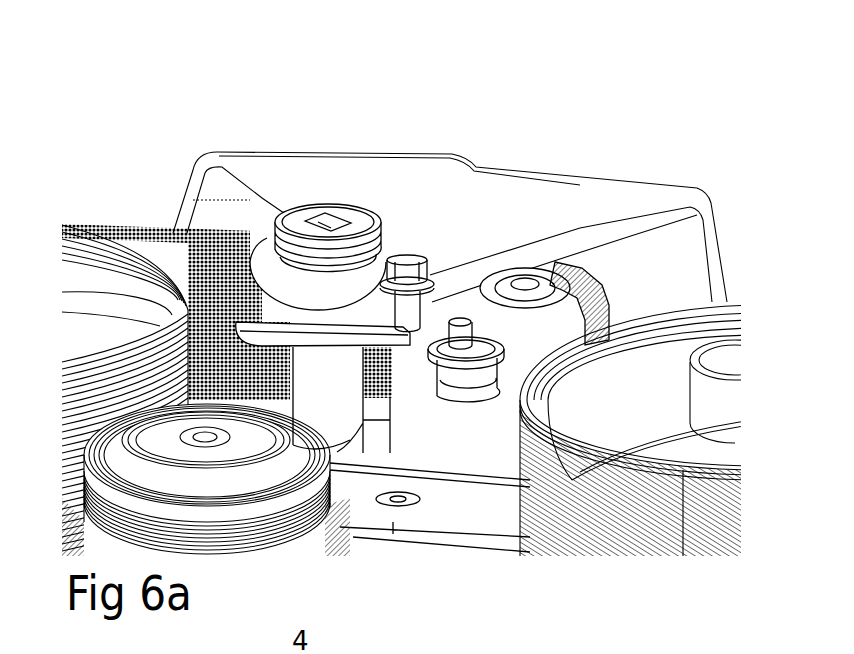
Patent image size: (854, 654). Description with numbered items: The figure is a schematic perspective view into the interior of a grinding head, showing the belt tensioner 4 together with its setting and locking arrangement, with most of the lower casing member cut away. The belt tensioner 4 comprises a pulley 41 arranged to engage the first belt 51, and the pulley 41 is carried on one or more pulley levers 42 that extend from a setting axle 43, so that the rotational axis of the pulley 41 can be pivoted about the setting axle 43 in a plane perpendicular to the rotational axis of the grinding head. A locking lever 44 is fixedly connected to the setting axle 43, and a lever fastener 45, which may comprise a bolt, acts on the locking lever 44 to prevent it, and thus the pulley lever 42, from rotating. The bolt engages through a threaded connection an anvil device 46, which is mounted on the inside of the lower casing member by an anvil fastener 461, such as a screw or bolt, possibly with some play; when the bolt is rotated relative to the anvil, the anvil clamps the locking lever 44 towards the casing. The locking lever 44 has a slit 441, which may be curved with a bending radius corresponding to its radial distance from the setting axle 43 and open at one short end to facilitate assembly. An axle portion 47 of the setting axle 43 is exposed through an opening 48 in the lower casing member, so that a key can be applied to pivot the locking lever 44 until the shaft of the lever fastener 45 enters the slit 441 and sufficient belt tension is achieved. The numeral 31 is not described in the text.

The belt tensioner 4 is at (390, 118).
The bracket 31 is at (597, 207).
The pulley 41 is at (545, 327).
The pulley lever 42 is at (560, 262).
The setting axle 43 is at (333, 383).
The locking lever 44 is at (300, 295).
The slit 441 is at (300, 323).
The lever fastener 45 is at (423, 256).
The anvil device 46 is at (462, 370).
The anvil fastener 461 is at (462, 337).
The axle portion 47 is at (297, 227).
The opening 48 is at (367, 215).
The first belt 51 is at (628, 483).